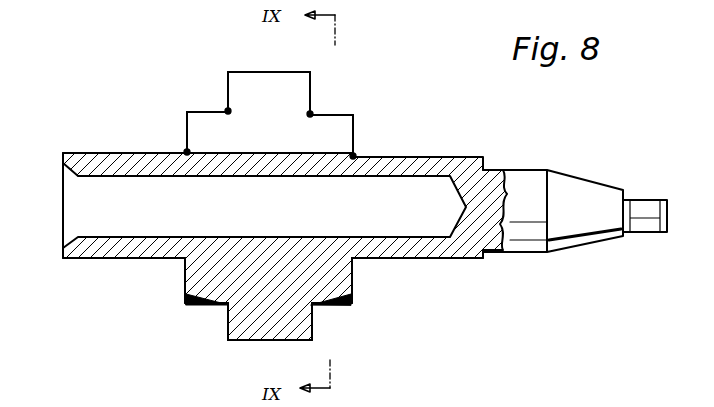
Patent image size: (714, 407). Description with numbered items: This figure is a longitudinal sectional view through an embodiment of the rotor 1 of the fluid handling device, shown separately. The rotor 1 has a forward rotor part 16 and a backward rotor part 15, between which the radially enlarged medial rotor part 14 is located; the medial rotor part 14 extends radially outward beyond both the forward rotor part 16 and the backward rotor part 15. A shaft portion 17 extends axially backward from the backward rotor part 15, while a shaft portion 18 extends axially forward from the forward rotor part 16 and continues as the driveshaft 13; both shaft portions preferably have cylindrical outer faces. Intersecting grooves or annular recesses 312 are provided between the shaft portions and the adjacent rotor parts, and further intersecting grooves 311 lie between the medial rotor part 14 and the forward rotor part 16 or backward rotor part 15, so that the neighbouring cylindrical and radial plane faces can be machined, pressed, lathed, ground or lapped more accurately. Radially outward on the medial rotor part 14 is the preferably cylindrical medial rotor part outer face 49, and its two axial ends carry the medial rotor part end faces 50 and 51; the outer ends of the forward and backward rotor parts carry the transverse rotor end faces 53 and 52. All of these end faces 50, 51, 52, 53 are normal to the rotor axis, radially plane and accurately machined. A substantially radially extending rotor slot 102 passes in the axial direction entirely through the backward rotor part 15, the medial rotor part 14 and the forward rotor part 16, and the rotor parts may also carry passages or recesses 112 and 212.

The rotor 1 is at (282, 262).
The driveshaft 13 is at (586, 238).
The medial rotor part 14 is at (252, 88).
The backward rotor part 15 is at (208, 118).
The forward rotor part 16 is at (327, 124).
The shaft portion 17 is at (95, 260).
The shaft portion 18 is at (418, 252).
The medial rotor part outer face 49 is at (243, 72).
The medial rotor part end face 50 is at (228, 80).
The medial rotor part end face 51 is at (310, 85).
The transverse rotor end face 52 is at (185, 122).
The transverse rotor end face 53 is at (353, 135).
The rotor slot 102 is at (234, 139).
The passage or recess 112 is at (350, 300).
The passage or recess 212 is at (190, 300).
The intersecting groove 311 is at (226, 110).
The intersecting groove 312 is at (185, 150).